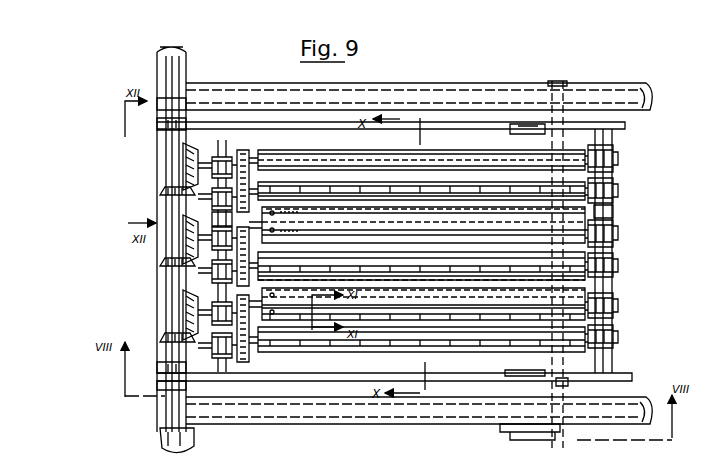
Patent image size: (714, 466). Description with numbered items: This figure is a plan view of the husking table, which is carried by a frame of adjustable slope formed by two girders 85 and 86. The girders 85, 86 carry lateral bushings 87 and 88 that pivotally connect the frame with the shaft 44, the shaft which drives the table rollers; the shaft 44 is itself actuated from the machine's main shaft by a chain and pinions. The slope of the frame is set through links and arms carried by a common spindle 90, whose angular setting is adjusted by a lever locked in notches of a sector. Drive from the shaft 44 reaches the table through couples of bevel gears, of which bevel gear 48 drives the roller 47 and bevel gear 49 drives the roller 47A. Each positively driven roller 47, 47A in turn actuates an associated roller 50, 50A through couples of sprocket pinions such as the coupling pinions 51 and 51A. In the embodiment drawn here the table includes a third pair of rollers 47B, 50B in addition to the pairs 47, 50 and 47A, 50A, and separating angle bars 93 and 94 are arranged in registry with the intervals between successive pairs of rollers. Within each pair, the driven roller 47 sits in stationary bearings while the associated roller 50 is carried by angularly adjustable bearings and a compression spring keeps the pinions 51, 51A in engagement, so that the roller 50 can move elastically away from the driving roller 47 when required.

The shaft 44 is at (170, 284).
The roller 47 is at (614, 152).
The roller 47A is at (614, 240).
The roller 47B is at (614, 302).
The bevel gear 48 is at (182, 170).
The bevel gear 49 is at (176, 259).
The associated roller 50 is at (613, 184).
The associated roller 50A is at (613, 264).
The associated roller 50B is at (614, 334).
The sprocket pinion 51 is at (243, 150).
The sprocket pinion 51A is at (214, 216).
The girder 85 is at (460, 122).
The girder 86 is at (450, 381).
The lateral bushing 87 is at (162, 125).
The lateral bushing 88 is at (165, 375).
The common spindle 90 is at (568, 380).
The separating angle bar 93 is at (293, 293).
The separating angle bar 94 is at (332, 215).